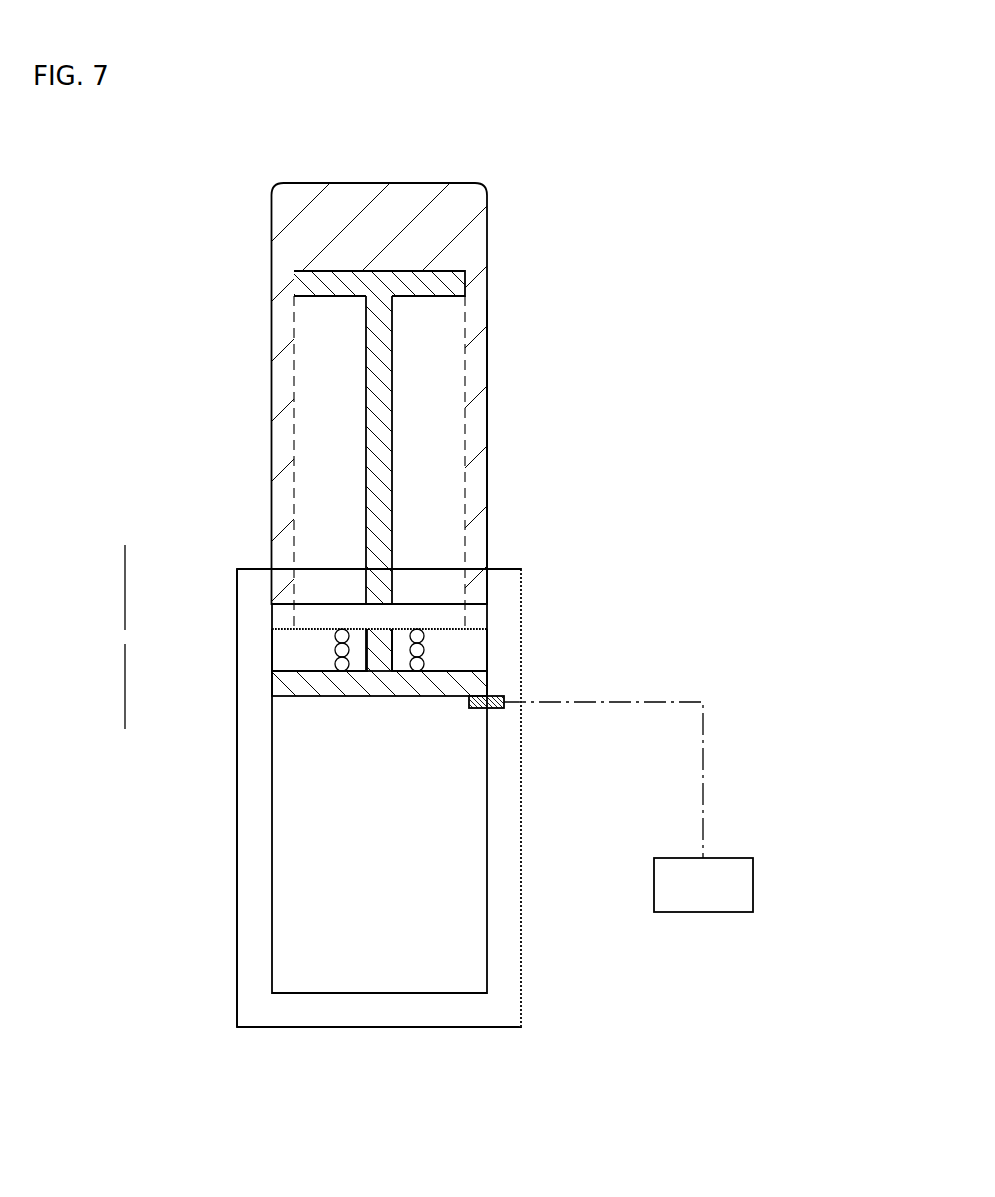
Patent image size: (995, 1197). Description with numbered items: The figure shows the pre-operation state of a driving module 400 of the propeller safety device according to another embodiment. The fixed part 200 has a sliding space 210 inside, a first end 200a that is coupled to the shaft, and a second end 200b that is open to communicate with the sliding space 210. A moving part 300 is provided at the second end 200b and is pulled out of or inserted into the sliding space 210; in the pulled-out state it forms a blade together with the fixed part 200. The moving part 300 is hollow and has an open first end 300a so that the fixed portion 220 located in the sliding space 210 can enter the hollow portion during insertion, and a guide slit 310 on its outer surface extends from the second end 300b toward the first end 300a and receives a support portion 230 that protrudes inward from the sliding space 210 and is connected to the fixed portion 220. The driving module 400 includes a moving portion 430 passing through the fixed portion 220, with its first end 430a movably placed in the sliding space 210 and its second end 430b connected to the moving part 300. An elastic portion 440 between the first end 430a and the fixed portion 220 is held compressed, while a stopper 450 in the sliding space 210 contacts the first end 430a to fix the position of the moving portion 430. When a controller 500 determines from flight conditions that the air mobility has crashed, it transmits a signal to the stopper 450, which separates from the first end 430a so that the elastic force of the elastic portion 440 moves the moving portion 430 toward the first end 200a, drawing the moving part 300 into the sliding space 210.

The fixed part 200 is at (523, 763).
The first end of fixed part 200a is at (250, 944).
The second end of fixed part 200b is at (507, 590).
The sliding space 210 is at (436, 932).
The fixed portion 220 is at (410, 615).
The support portion 230 is at (480, 617).
The moving part 300 is at (463, 213).
The first end of moving part 300a is at (487, 463).
The second end of moving part 300b is at (285, 224).
The guide slit 310 is at (478, 408).
The driving module 400 is at (131, 537).
The moving portion 430 is at (391, 536).
The first end of moving portion 430a is at (480, 685).
The second end of moving portion 430b is at (300, 285).
The elastic portion 440 is at (342, 650).
The stopper 450 is at (478, 710).
The controller 500 is at (745, 885).